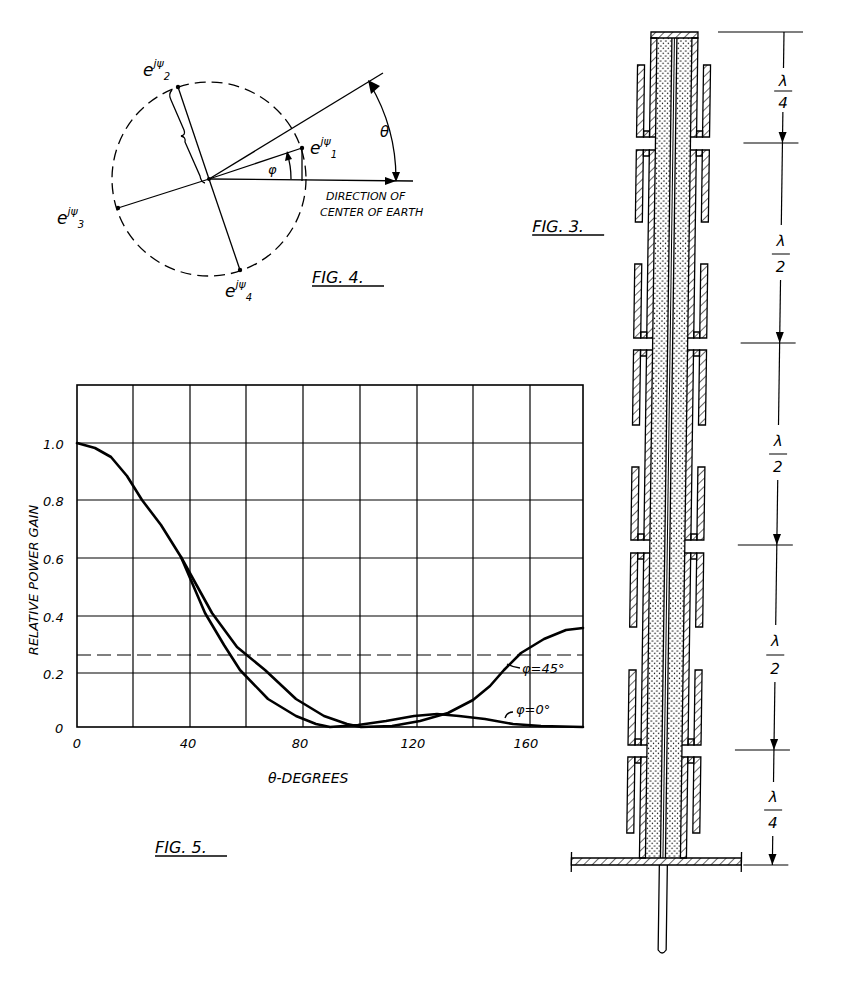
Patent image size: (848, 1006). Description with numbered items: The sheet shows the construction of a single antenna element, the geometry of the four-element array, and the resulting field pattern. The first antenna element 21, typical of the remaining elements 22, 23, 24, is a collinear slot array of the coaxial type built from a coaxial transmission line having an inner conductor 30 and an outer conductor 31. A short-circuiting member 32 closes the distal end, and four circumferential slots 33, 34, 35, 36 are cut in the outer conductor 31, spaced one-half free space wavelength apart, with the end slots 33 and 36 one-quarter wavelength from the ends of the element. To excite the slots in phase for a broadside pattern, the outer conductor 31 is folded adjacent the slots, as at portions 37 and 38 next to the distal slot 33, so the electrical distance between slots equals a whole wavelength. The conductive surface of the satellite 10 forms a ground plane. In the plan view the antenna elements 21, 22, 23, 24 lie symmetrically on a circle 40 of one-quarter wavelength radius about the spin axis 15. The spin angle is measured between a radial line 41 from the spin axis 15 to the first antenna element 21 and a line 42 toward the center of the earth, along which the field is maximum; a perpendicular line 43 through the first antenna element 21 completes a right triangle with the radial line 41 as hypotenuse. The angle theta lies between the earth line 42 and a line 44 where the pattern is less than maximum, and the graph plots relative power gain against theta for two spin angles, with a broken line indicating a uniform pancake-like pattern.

In FIG. 3, the satellite 10 is at (612, 857).
In FIG. 4, the spin axis 15 is at (211, 176).
In FIG. 3, the first antenna element 21 is at (636, 78).
In FIG. 4, the first antenna element 21 is at (303, 147).
In FIG. 4, the second antenna element 22 is at (181, 86).
In FIG. 4, the third antenna element 23 is at (120, 206).
In FIG. 4, the fourth antenna element 24 is at (242, 266).
In FIG. 3, the inner conductor 30 is at (672, 251).
In FIG. 3, the outer conductor 31 is at (697, 263).
In FIG. 3, the short-circuiting member 32 is at (671, 31).
In FIG. 3, the slot 33 is at (639, 143).
In FIG. 3, the slot 34 is at (645, 346).
In FIG. 3, the slot 35 is at (640, 552).
In FIG. 3, the slot 36 is at (634, 757).
In FIG. 3, the folded portion 37 is at (637, 108).
In FIG. 3, the folded portion 38 is at (637, 185).
In FIG. 4, the circle 40 is at (258, 93).
In FIG. 4, the radial line 41 is at (254, 162).
In FIG. 4, the earth line 42 is at (254, 184).
In FIG. 4, the perpendicular line 43 is at (306, 172).
In FIG. 4, the line 44 is at (317, 111).